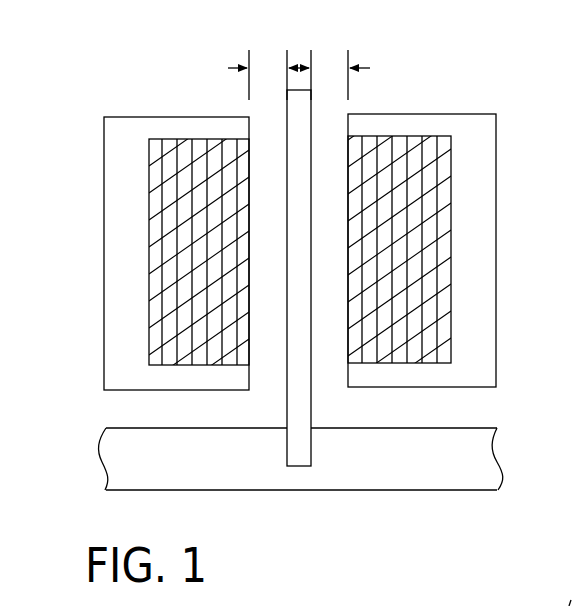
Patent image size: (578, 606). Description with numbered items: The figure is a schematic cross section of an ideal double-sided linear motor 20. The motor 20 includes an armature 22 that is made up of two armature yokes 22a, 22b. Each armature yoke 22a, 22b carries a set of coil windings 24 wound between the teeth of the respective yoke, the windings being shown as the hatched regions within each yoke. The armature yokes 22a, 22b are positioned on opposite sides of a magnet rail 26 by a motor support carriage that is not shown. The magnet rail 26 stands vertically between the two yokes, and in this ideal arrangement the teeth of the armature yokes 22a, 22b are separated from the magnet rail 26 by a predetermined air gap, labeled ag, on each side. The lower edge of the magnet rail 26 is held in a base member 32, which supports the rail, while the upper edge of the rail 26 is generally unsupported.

The double-sided linear motor 20 is at (70, 94).
The armature 22 is at (298, 44).
The armature yoke 22a is at (127, 128).
The armature yoke 22b is at (405, 118).
The coil windings 24 is at (150, 272).
The magnet rail 26 is at (298, 219).
The base member 32 is at (207, 462).